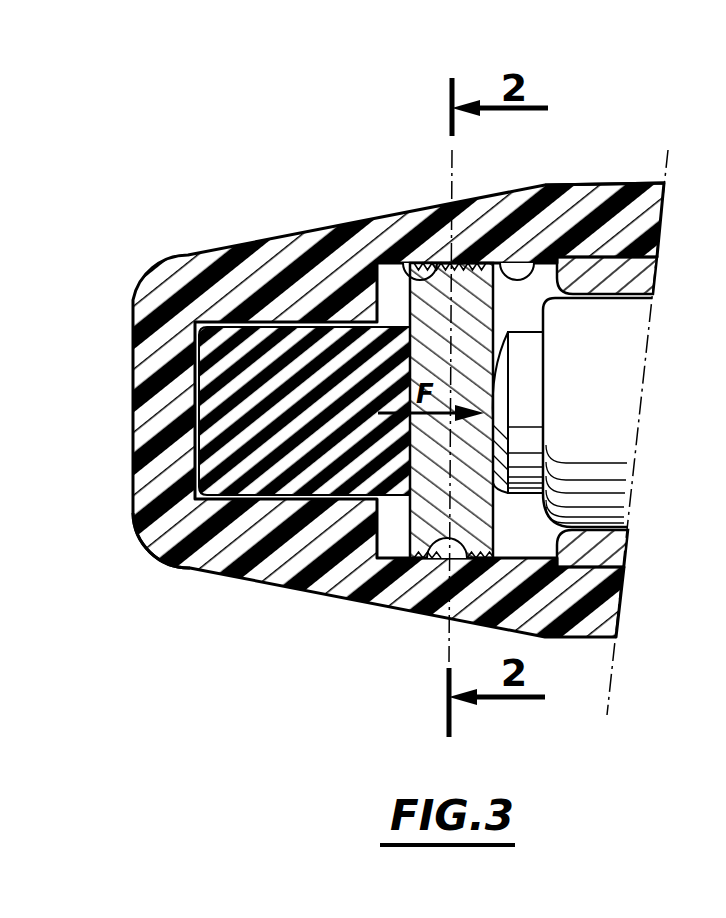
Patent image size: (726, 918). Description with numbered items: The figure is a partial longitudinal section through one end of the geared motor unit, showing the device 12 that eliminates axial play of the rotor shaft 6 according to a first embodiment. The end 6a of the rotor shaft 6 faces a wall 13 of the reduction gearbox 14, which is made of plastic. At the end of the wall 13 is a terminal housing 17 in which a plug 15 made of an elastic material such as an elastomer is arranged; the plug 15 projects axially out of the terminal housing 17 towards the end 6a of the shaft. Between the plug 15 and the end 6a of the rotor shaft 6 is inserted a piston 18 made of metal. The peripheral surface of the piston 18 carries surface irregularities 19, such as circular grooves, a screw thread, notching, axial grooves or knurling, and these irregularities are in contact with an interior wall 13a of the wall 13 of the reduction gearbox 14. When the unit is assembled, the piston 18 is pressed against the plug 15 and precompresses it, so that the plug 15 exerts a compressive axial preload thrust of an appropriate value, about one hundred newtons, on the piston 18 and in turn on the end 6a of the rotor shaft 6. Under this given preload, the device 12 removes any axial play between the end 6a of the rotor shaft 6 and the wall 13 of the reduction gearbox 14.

The wall 13 is at (293, 232).
The reduction gearbox 14 is at (623, 178).
The interior wall 13a is at (540, 258).
The surface irregularities 19 is at (394, 260).
The piston 18 is at (394, 533).
The plug 15 is at (280, 440).
The terminal housing 17 is at (152, 545).
The device 12 is at (519, 534).
The rotor shaft 6 is at (612, 387).
The end of the rotor shaft 6a is at (606, 508).